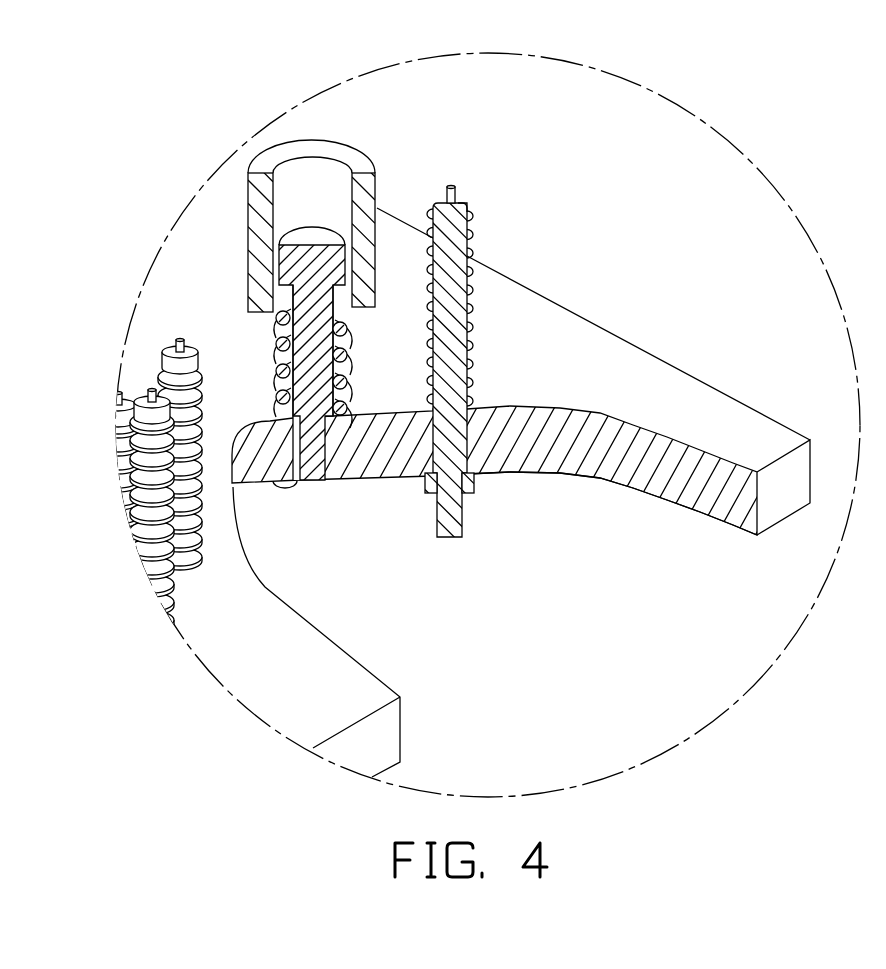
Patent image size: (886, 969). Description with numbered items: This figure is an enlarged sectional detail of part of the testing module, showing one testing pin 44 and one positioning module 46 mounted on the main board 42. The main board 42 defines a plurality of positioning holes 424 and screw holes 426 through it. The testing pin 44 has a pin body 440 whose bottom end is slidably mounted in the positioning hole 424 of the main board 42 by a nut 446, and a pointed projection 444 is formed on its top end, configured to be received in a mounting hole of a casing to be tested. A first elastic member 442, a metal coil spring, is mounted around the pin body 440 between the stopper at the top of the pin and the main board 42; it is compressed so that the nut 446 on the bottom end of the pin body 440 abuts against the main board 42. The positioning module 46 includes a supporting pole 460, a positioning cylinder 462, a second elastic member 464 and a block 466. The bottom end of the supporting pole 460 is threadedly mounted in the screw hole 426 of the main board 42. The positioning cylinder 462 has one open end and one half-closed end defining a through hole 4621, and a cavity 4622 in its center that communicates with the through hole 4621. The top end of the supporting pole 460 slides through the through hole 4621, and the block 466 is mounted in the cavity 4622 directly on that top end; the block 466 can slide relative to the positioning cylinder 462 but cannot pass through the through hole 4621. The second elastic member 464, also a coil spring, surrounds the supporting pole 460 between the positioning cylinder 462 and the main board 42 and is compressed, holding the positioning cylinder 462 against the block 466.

The main board 42 is at (613, 373).
The positioning hole 424 is at (550, 470).
The screw hole 426 is at (327, 450).
The testing pin 44 is at (493, 303).
The pin body 440 is at (468, 232).
The first elastic member 442 is at (470, 220).
The pointed projection 444 is at (448, 186).
The nut 446 is at (473, 490).
The positioning module 46 is at (332, 143).
The supporting pole 460 is at (310, 343).
The positioning cylinder 462 is at (263, 210).
The through hole 4621 is at (288, 290).
The cavity 4622 is at (313, 180).
The second elastic member 464 is at (280, 344).
The block 466 is at (297, 257).